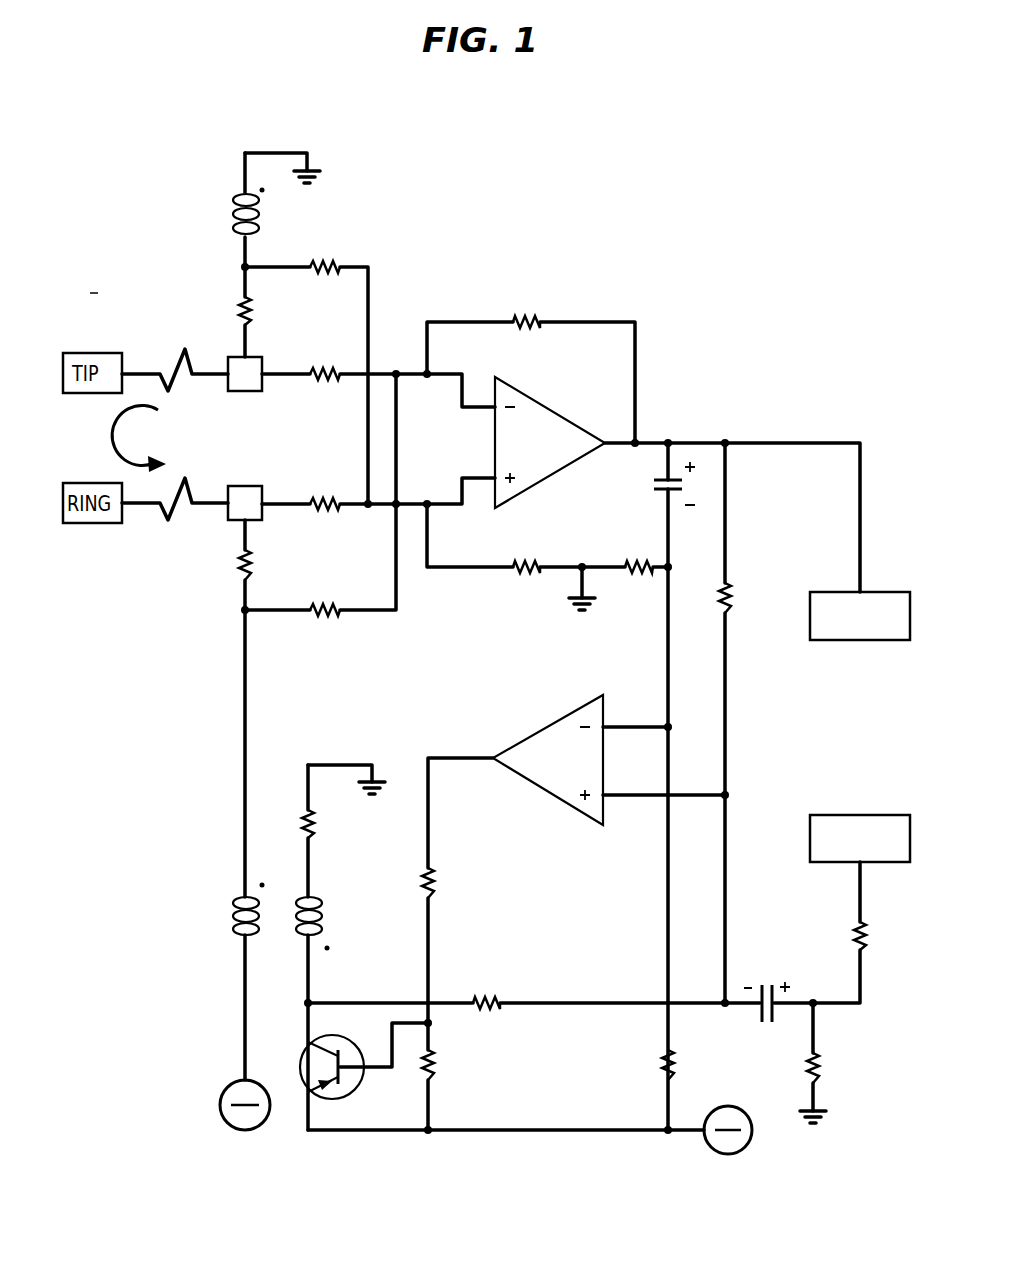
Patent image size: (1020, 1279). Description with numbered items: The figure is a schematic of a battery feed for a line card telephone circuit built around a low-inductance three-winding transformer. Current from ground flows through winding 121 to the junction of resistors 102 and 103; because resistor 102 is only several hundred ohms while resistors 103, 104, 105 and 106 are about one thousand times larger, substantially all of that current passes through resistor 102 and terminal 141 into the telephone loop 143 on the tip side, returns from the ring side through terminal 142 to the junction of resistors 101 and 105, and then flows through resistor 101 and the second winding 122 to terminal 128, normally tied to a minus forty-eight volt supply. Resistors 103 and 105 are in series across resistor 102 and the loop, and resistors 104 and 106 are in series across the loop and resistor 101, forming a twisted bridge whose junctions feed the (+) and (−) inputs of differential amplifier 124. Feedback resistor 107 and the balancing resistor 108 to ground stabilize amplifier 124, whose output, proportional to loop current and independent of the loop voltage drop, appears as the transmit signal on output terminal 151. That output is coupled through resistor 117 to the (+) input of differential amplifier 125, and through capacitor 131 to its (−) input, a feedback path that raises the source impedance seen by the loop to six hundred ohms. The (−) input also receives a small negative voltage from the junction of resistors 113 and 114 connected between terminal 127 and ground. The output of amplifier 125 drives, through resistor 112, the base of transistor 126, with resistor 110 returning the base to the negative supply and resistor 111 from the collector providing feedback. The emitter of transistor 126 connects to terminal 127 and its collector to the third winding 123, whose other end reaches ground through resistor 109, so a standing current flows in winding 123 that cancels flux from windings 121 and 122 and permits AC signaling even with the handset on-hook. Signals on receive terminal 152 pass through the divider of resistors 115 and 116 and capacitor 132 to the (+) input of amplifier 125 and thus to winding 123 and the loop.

The resistor 101 is at (233, 570).
The resistor 102 is at (236, 311).
The resistor 103 is at (324, 258).
The resistor 104 is at (321, 362).
The resistor 105 is at (326, 518).
The resistor 106 is at (326, 624).
The resistor 107 is at (527, 310).
The resistor 108 is at (527, 580).
The resistor 109 is at (316, 815).
The resistor 110 is at (436, 1058).
The resistor 111 is at (488, 990).
The resistor 112 is at (433, 885).
The resistor 113 is at (660, 1060).
The resistor 114 is at (640, 580).
The resistor 115 is at (852, 936).
The resistor 116 is at (822, 1060).
The resistor 117 is at (733, 595).
The winding 121 is at (233, 211).
The second winding 122 is at (233, 920).
The third winding 123 is at (322, 910).
The differential amplifier 124 is at (554, 412).
The differential amplifier 125 is at (548, 727).
The transistor 126 is at (301, 1056).
The terminal 127 is at (748, 1150).
The terminal 128 is at (220, 1105).
The capacitor 131 is at (660, 482).
The capacitor 132 is at (760, 1012).
The terminal 141 is at (252, 392).
The terminal 142 is at (252, 486).
The telephone loop 143 is at (108, 438).
The output terminal 151 is at (850, 640).
The receive terminal 152 is at (865, 815).